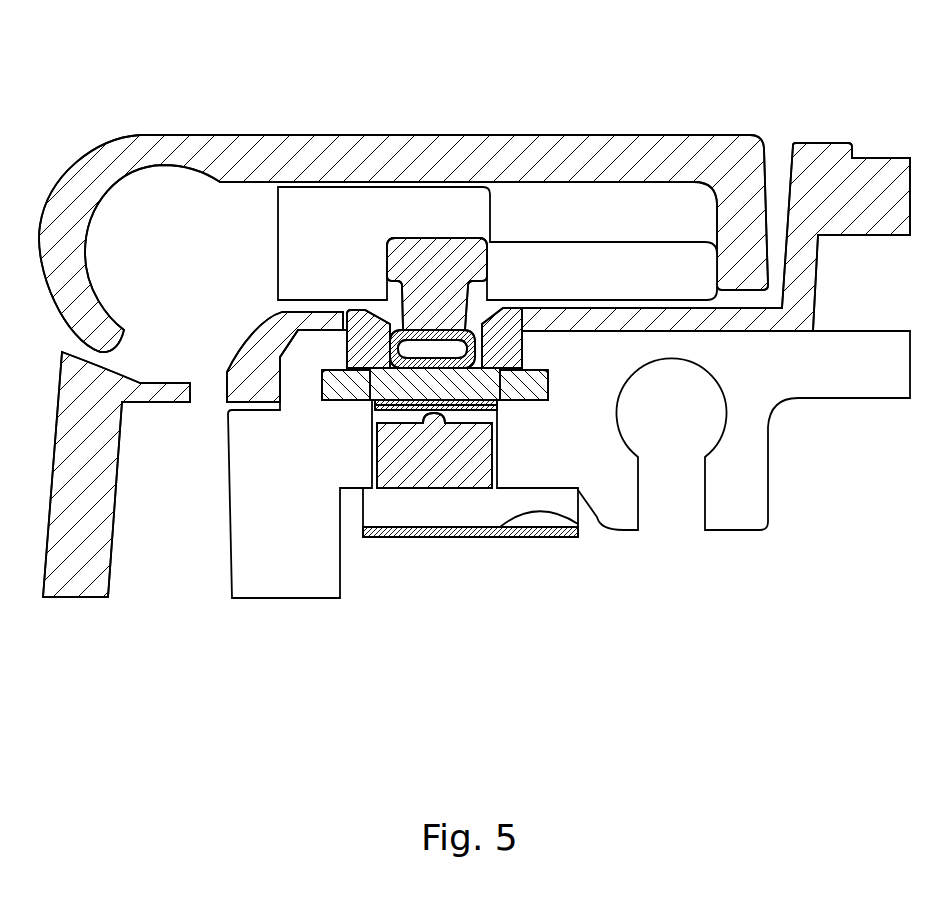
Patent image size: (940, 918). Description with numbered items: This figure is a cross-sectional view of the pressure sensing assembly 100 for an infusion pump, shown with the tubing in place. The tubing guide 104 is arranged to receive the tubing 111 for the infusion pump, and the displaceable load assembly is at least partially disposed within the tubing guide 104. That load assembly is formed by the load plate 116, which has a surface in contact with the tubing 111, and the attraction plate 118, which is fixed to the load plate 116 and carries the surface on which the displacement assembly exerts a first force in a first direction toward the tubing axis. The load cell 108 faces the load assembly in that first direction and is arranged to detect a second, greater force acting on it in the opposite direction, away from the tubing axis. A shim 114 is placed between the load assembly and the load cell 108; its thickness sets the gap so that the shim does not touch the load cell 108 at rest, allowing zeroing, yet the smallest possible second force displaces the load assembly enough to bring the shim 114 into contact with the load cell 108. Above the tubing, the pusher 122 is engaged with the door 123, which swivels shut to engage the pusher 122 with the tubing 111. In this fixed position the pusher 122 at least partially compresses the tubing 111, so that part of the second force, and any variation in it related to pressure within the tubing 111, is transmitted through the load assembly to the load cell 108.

The pressure sensing assembly 100 is at (474, 379).
The tubing guide 104 is at (347, 303).
The load cell 108 is at (442, 498).
The tubing 111 is at (442, 327).
The shim 114 is at (498, 403).
The load plate 116 is at (393, 388).
The attraction plate 118 is at (410, 420).
The pusher 122 is at (425, 237).
The door 123 is at (114, 138).